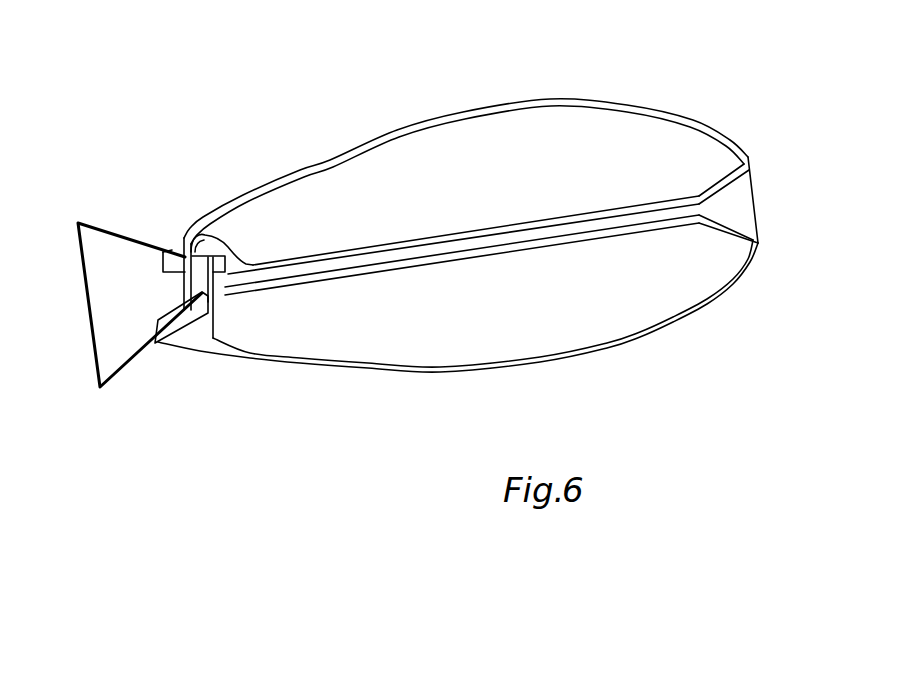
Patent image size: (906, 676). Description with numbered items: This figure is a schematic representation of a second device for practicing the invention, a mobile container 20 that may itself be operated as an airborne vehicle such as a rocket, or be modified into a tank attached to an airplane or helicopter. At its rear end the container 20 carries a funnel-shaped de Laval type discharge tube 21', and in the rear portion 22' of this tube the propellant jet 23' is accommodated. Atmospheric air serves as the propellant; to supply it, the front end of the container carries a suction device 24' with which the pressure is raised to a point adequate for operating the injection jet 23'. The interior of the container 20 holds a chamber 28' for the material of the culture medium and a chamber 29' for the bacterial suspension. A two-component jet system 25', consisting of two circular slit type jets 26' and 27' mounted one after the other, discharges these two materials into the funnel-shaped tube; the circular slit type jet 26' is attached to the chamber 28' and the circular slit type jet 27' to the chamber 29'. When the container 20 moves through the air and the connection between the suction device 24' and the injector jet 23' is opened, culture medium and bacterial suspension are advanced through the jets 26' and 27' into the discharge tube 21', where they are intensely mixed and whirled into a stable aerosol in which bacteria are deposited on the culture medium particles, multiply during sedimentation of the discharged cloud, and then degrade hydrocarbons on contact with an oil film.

The mobile container 20 is at (573, 95).
The funnel-shaped de Laval type discharge tube 21' is at (140, 281).
The rear portion 22' is at (243, 236).
The propellant jet 23' is at (249, 296).
The suction device 24' is at (728, 243).
The two-component jet system 25' is at (172, 346).
The circular slit type jet 26' is at (221, 330).
The circular slit type jet 27' is at (164, 224).
The chamber 28' is at (458, 329).
The chamber 29' is at (466, 159).